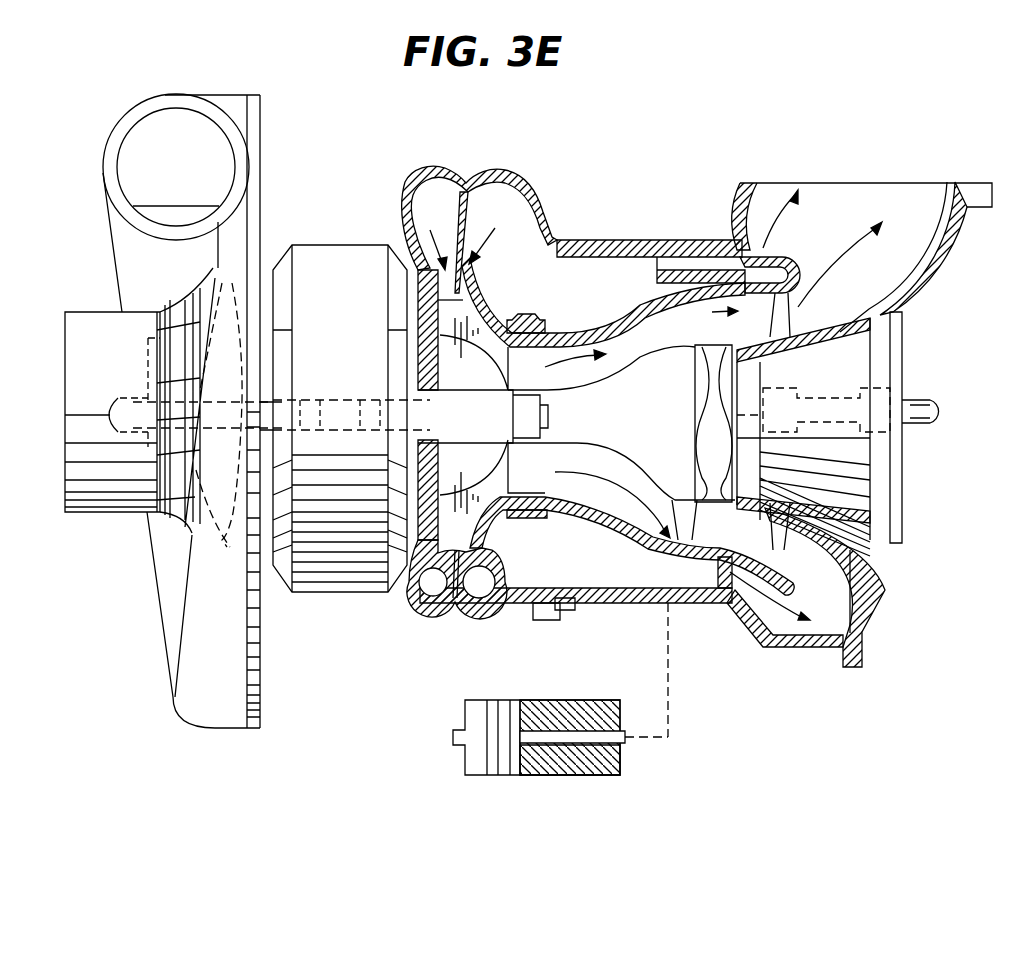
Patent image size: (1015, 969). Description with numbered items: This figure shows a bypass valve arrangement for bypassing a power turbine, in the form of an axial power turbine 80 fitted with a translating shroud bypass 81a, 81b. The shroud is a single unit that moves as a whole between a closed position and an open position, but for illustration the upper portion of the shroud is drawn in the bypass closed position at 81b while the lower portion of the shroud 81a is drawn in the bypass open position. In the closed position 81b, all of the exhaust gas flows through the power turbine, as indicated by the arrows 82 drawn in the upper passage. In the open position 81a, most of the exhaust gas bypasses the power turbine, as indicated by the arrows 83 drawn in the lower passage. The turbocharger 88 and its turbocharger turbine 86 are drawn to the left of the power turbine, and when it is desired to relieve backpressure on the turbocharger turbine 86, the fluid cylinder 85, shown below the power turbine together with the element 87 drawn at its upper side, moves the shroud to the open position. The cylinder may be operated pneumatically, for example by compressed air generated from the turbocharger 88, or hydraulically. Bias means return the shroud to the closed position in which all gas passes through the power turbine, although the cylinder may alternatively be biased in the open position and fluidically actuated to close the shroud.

The axial power turbine 80 is at (792, 205).
The shroud lower portion in bypass open position 81a is at (716, 605).
The shroud upper portion in bypass closed position 81b is at (677, 242).
The arrows indicating exhaust gas flow through power turbine 82 is at (652, 340).
The arrows indicating bypass exhaust gas flow 83 is at (575, 468).
The fluid cylinder 85 is at (555, 775).
The turbocharger turbine 86 is at (532, 187).
The actuator housing 87 is at (580, 700).
The turbocharger 88 is at (331, 180).